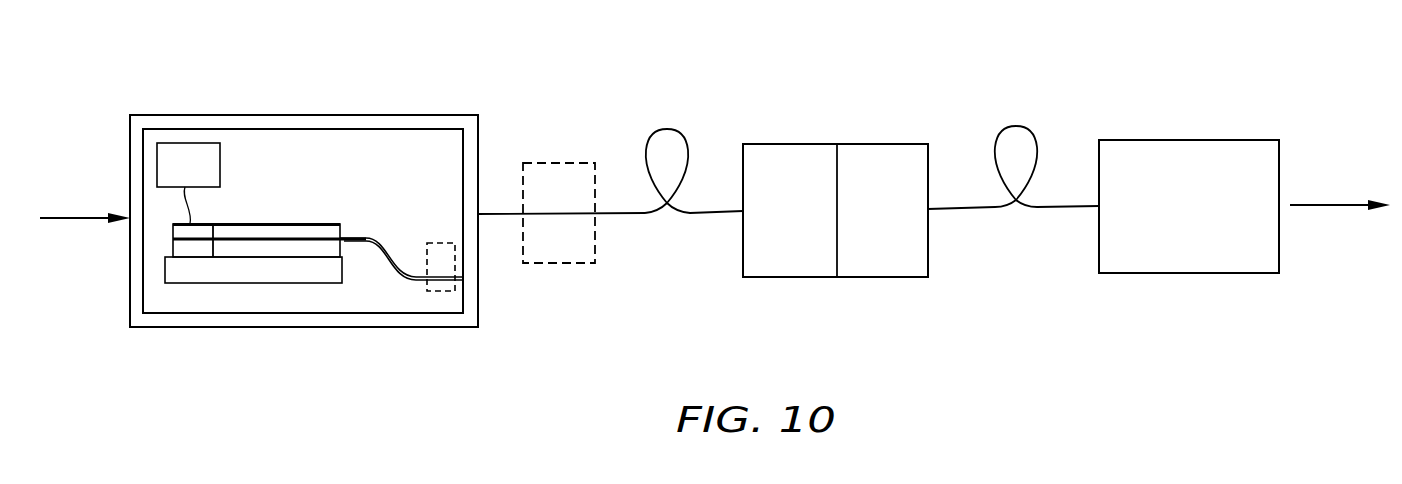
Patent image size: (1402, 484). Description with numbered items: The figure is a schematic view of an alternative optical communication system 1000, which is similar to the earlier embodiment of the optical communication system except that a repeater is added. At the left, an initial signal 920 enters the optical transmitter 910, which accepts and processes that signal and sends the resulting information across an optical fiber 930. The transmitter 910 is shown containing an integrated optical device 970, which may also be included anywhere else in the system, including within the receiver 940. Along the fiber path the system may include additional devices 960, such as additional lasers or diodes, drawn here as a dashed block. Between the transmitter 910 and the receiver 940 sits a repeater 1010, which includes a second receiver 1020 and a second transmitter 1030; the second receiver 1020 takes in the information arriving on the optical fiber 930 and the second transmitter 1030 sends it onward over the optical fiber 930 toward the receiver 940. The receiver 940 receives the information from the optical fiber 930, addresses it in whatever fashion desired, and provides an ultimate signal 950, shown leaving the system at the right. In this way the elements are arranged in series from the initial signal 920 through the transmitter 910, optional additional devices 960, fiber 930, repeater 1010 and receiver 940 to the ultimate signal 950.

The optical communication system 1000 is at (194, 74).
The optical transmitter 910 is at (330, 113).
The initial signal 920 is at (70, 216).
The optical fiber 930 is at (668, 130).
The receiver 940 is at (1215, 140).
The ultimate signal 950 is at (1327, 205).
The additional devices 960 is at (557, 163).
The integrated optical device 970 is at (288, 298).
The repeater 1010 is at (893, 306).
The second receiver 1020 is at (785, 144).
The second transmitter 1030 is at (893, 144).